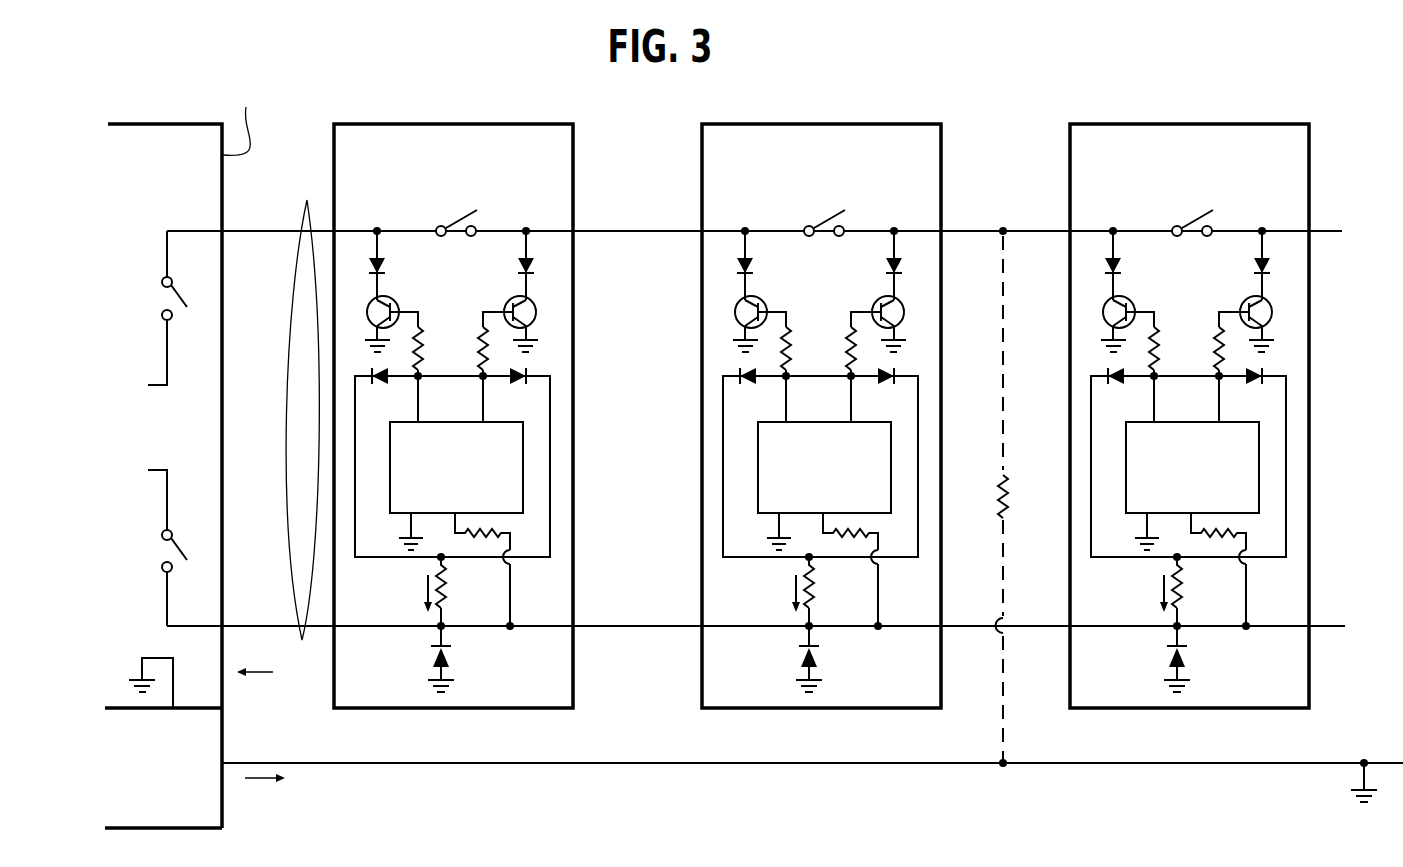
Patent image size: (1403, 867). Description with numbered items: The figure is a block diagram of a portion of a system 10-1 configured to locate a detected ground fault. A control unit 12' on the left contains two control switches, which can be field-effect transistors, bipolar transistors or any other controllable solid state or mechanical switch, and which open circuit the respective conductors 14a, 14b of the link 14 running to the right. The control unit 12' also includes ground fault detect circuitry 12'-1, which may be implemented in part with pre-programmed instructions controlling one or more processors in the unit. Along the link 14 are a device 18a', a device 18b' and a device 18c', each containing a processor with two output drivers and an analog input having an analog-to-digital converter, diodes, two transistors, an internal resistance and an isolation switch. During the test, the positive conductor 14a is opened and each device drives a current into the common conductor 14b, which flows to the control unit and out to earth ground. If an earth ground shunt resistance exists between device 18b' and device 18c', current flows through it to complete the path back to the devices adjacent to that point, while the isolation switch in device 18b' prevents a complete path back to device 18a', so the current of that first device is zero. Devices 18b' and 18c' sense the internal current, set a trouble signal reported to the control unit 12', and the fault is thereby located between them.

The control unit 12' is at (206, 443).
The ground fault detect circuitry 12'-1 is at (195, 774).
The link 14 is at (309, 200).
The conductor 14a is at (246, 234).
The conductor 14b is at (263, 626).
The system 10-1 is at (755, 785).
The device 18a' is at (453, 433).
The device 18b' is at (821, 433).
The device 18c' is at (1189, 433).